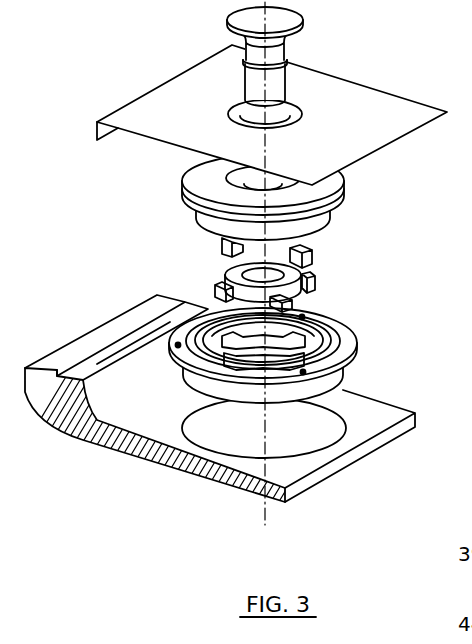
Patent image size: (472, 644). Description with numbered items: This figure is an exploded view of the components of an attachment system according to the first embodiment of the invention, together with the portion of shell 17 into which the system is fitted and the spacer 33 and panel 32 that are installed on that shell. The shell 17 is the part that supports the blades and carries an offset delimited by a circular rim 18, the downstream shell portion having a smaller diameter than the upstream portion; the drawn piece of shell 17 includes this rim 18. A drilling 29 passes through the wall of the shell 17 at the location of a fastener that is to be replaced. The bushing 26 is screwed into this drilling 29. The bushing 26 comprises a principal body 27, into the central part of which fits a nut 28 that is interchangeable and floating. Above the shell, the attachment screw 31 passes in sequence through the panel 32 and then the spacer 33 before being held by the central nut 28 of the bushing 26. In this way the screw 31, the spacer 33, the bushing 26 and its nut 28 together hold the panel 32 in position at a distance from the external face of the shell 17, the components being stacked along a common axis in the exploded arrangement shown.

The shell 17 is at (312, 473).
The circular rim 18 is at (132, 340).
The bushing 26 is at (352, 287).
The principal body 27 is at (386, 365).
The nut 28 is at (227, 268).
The drilling 29 is at (208, 434).
The attachment screw 31 is at (227, 23).
The panel 32 is at (325, 83).
The spacer 33 is at (362, 208).